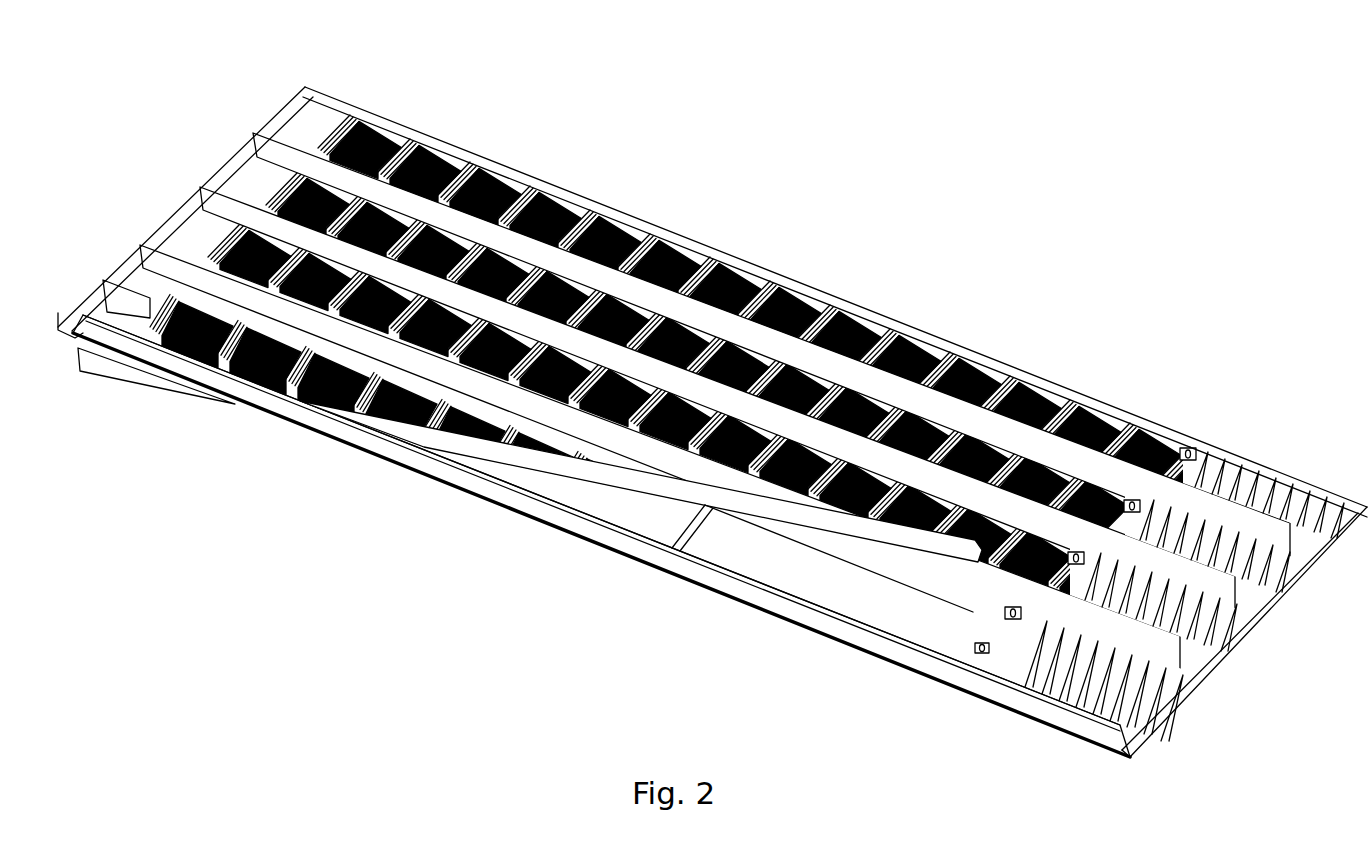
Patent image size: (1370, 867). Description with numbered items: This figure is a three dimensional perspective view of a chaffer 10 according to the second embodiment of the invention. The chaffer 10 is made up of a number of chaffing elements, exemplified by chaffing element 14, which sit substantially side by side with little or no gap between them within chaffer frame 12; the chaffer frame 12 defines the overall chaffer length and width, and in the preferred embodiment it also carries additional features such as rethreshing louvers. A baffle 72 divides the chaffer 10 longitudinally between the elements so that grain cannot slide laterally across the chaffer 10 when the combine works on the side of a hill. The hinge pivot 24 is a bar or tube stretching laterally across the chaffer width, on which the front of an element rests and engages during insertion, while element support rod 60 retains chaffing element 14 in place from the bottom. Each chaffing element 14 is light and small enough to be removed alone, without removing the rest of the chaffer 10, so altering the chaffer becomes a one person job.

The chaffer 10 is at (843, 270).
The chaffer frame 12 is at (783, 620).
The chaffing element 14 is at (637, 490).
The hinge pivot 24 is at (290, 421).
The element support rod 60 is at (698, 517).
The baffle 72 is at (880, 575).